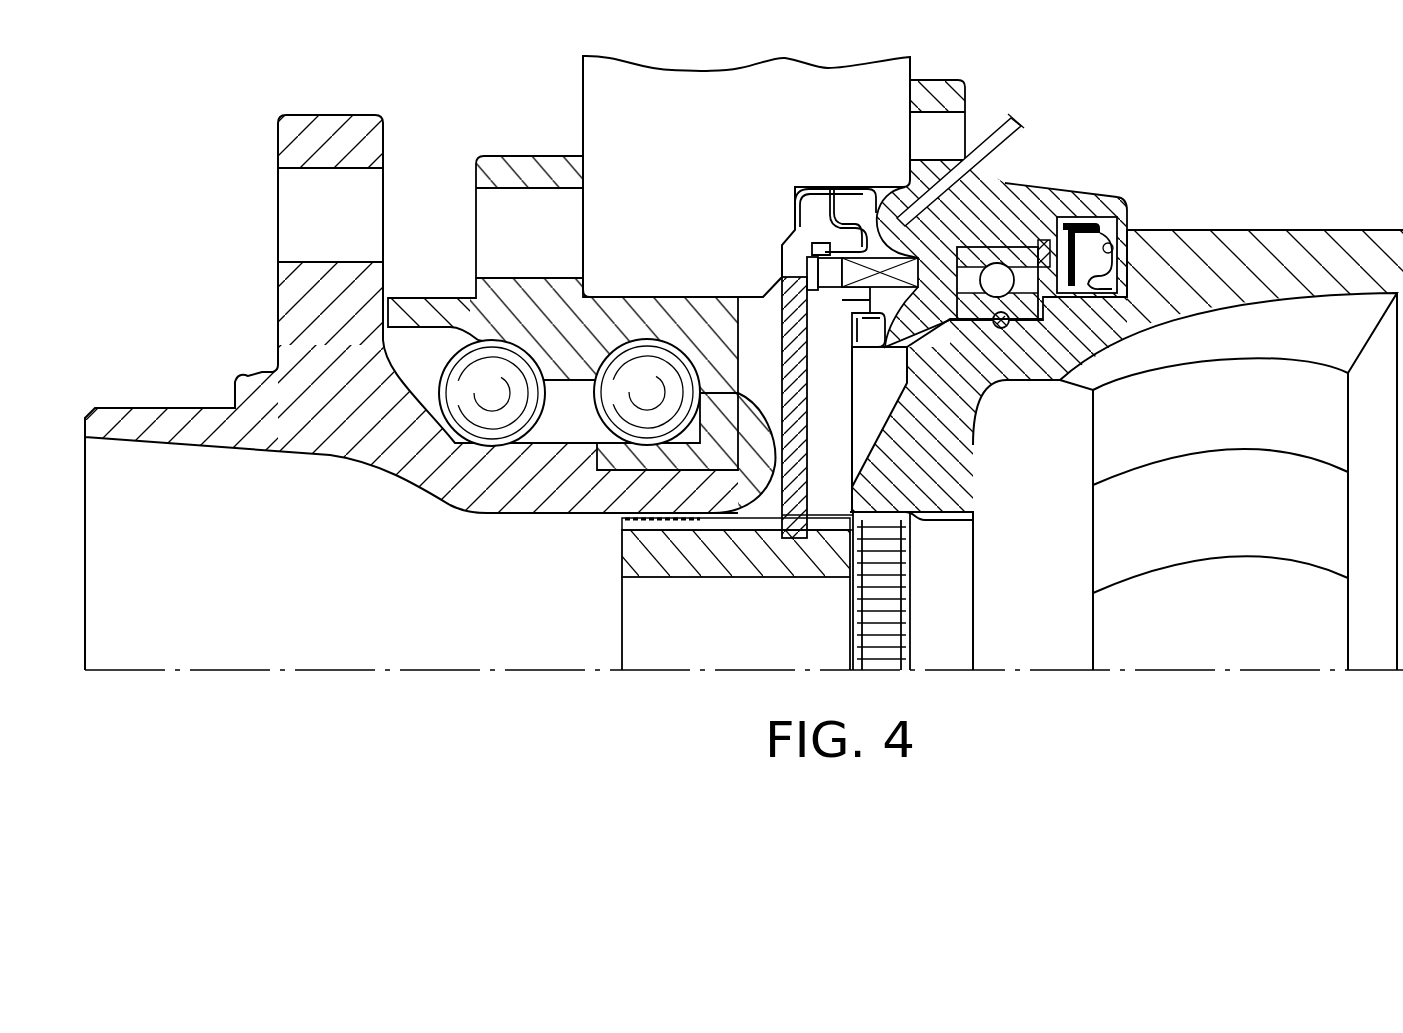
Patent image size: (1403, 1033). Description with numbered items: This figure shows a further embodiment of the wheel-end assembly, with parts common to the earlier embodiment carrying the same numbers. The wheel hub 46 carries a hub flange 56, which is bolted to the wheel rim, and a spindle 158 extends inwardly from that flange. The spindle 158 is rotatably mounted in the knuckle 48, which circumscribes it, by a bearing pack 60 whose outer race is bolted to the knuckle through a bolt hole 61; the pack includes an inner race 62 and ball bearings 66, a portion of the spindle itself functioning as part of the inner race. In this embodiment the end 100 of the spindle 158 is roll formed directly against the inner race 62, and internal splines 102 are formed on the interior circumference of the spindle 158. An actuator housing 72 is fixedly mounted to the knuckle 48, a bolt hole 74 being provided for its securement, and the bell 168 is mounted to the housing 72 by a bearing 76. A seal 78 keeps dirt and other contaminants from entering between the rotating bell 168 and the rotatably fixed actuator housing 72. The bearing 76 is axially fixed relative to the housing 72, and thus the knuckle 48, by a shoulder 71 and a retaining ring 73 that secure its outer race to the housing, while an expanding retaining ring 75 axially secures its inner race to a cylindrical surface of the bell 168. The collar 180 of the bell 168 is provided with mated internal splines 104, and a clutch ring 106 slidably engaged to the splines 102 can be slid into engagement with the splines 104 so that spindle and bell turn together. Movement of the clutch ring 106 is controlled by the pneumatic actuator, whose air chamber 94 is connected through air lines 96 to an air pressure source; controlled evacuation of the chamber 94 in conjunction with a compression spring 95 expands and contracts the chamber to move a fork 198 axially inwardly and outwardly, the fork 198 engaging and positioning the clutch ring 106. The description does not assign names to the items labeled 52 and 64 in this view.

The wheel hub 46 is at (333, 447).
The knuckle 48 is at (600, 100).
The steering knuckle 52 is at (1233, 240).
The hub flange 56 is at (285, 295).
The bearing pack 60 is at (581, 312).
The bolt hole 61 is at (487, 215).
The inner race 62 is at (692, 456).
The bearing outer race 64 is at (483, 310).
The ball bearings 66 is at (498, 400).
The shoulder 71 is at (1044, 256).
The actuator housing 72 is at (978, 207).
The retaining ring 73 is at (1062, 217).
The bolt hole 74 is at (950, 130).
The expanding retaining ring 75 is at (1003, 331).
The bearing 76 is at (1027, 310).
The seal 78 is at (1090, 237).
The air chamber 94 is at (868, 205).
The compression spring 95 is at (847, 275).
The air lines 96 is at (1012, 120).
The end of spindle 100 is at (792, 335).
The internal splines 102 is at (628, 525).
The internal splines 104 is at (878, 520).
The clutch ring 106 is at (756, 557).
The spindle 158 is at (513, 500).
The bell 168 is at (1040, 345).
The collar 180 is at (945, 488).
The fork 198 is at (805, 275).